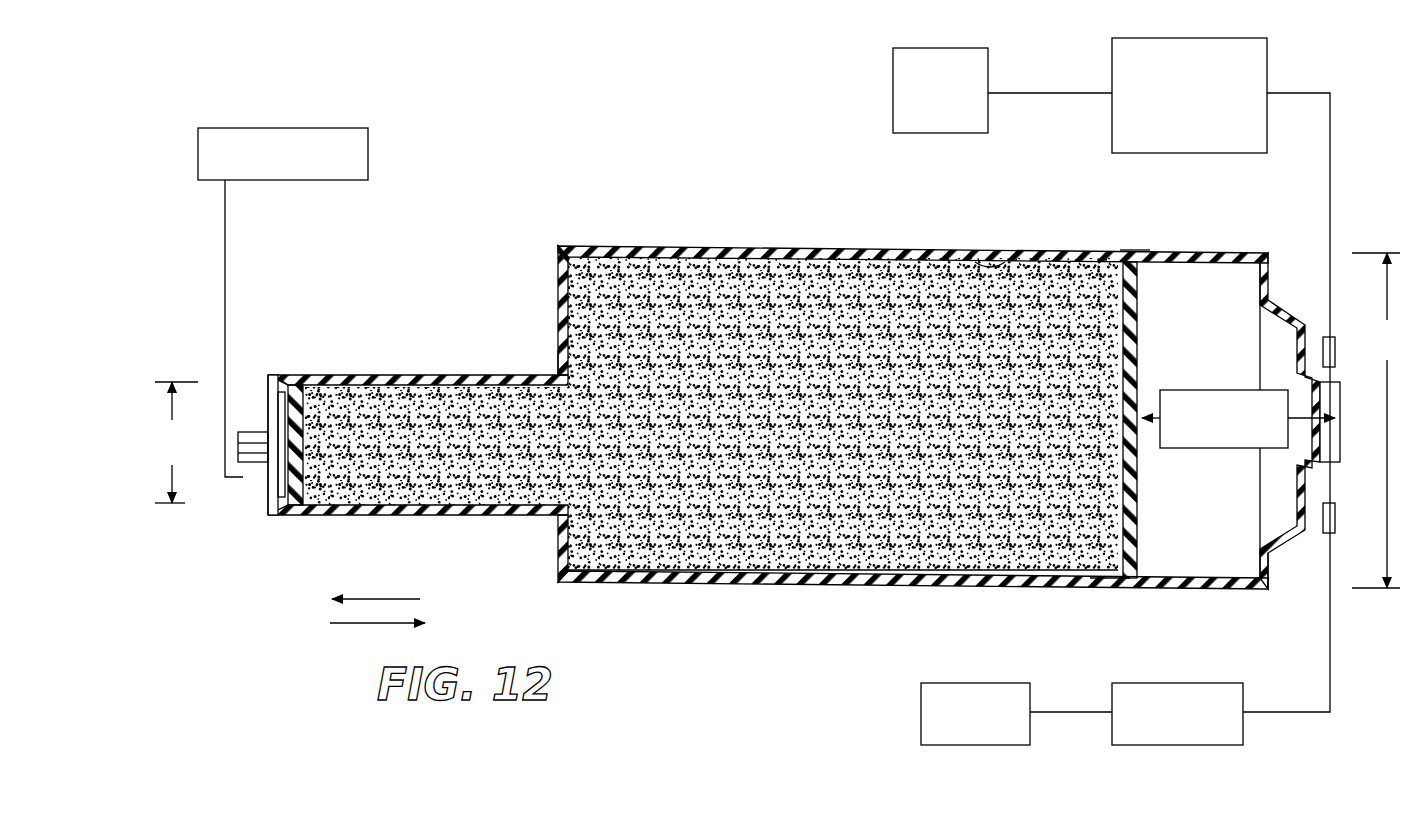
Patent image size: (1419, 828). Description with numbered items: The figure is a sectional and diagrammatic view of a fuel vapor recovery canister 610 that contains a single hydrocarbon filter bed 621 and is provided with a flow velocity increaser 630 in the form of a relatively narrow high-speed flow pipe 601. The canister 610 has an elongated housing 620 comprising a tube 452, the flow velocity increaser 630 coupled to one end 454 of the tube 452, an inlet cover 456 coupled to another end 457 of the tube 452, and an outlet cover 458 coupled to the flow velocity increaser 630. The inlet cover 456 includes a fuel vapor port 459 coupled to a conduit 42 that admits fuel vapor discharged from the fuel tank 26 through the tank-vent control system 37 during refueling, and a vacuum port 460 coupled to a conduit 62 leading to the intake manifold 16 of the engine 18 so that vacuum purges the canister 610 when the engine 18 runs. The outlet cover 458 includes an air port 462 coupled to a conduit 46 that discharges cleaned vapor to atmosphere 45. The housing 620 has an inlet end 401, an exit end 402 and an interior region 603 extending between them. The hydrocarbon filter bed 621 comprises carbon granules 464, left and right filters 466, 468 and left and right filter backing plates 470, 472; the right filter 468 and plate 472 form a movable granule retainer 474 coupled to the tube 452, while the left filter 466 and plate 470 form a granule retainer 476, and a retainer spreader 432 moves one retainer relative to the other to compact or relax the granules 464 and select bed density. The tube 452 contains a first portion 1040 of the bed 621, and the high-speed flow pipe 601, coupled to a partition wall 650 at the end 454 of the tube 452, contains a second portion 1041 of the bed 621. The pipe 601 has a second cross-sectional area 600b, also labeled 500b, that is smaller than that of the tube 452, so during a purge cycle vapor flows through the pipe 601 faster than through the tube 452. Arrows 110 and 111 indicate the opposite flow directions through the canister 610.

The atmosphere 45 is at (313, 128).
The conduit 46 is at (225, 280).
The fuel vapor recovery canister 610 is at (683, 138).
The elongated housing 620 is at (553, 243).
The one end of tube 454 is at (586, 246).
The tube 452 is at (707, 243).
The carbon granules 464 is at (808, 268).
The hydrocarbon filter bed 621 is at (900, 256).
The interior region 603 is at (990, 262).
The movable granule retainer 474 is at (1130, 250).
The inlet end 401 is at (1215, 292).
The fuel tank 26 is at (962, 62).
The tank-vent control system 37 is at (1120, 50).
The conduit 42 is at (1328, 195).
The fuel vapor port 459 is at (1333, 337).
The second cross-sectional area 500b is at (1385, 420).
The retainer spreader 432 is at (1200, 390).
The vacuum port 460 is at (1338, 522).
The inlet cover 456 is at (1290, 547).
The another end of tube 457 is at (1237, 590).
The right filter backing plate 472 is at (1110, 588).
The right filter 468 is at (1098, 585).
The first portion of hydrocarbon filter bed 1040 is at (990, 580).
The conduit 62 is at (1330, 665).
The engine 18 is at (953, 684).
The intake manifold 16 is at (1168, 684).
The fixed granule retainer 476 is at (284, 374).
The exit end 402 is at (272, 398).
The high-speed flow pipe 601 is at (352, 376).
The partition wall 650 is at (558, 350).
The second cross-sectional area 600b is at (171, 442).
The air port 462 is at (245, 464).
The outlet cover 458 is at (265, 518).
The left filter backing plate 470 is at (290, 510).
The left filter 466 is at (296, 506).
The second portion of hydrocarbon filter bed 1041 is at (385, 490).
The flow direction arrow 110 is at (400, 598).
The flow velocity increaser 630 is at (490, 540).
The flow direction arrow 111 is at (362, 623).